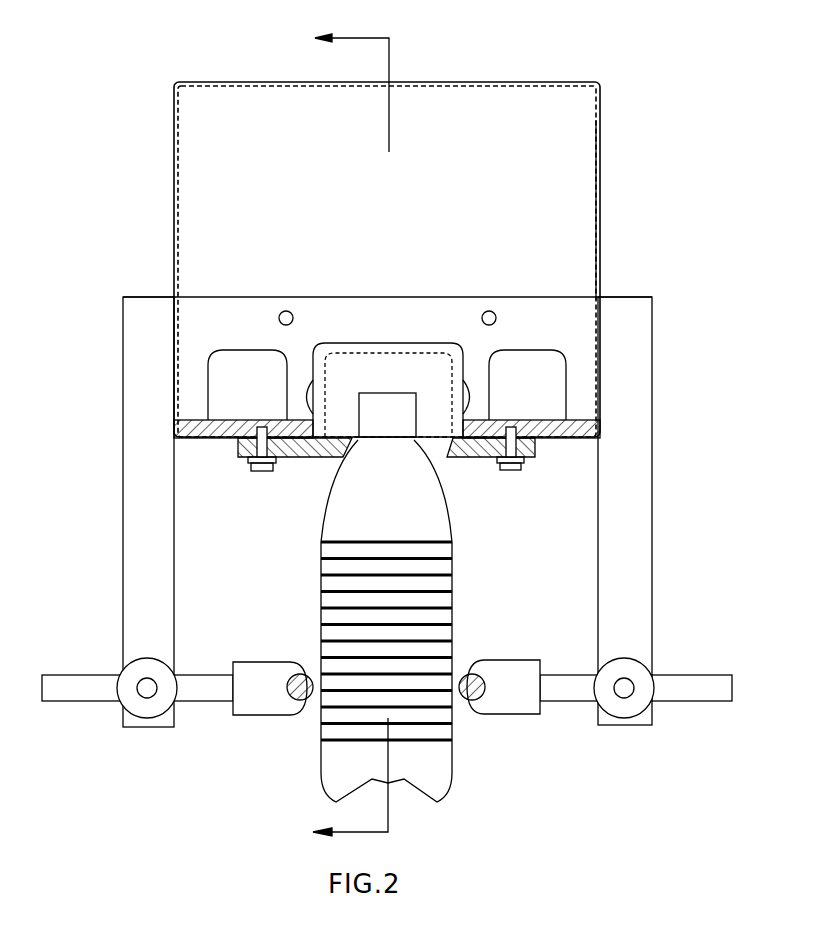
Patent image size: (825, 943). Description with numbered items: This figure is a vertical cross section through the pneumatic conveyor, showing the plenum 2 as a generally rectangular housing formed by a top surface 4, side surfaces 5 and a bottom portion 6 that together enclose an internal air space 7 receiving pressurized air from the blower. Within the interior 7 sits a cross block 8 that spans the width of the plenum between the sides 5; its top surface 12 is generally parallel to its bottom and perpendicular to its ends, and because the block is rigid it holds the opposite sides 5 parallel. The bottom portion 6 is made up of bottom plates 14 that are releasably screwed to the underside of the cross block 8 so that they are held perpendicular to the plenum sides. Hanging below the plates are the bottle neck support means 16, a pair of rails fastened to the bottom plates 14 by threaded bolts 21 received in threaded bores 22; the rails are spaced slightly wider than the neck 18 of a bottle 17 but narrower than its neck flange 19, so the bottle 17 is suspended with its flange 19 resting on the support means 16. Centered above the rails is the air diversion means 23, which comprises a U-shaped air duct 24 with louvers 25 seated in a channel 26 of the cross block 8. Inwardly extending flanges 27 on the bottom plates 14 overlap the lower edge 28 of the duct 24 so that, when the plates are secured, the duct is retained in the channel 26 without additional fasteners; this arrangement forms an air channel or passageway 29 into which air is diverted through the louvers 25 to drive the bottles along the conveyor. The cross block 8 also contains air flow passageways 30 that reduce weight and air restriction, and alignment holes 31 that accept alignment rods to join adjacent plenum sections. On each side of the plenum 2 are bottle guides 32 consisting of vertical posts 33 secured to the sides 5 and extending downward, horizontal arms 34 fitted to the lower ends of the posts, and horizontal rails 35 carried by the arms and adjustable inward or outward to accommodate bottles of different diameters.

The plenum 2 is at (428, 225).
The top surface 4 is at (290, 433).
The side surfaces 5 is at (650, 210).
The bottom portion 6 is at (456, 427).
The internal air space 7 is at (283, 171).
The cross block 8 is at (313, 258).
The top surface of cross block 12 is at (419, 249).
The bottom plates 14 is at (292, 393).
The bottle neck support means 16 is at (156, 467).
The bottle 17 is at (382, 517).
The neck 18 is at (445, 507).
The neck flange 19 is at (469, 541).
The threaded bolts 21 is at (159, 512).
The threaded bores 22 is at (626, 478).
The air diversion means 23 is at (444, 230).
The air duct 24 is at (524, 389).
The louvers 25 is at (263, 327).
The channel 26 is at (597, 332).
The inwardly extending flanges 27 is at (485, 481).
The lower edge 28 is at (278, 518).
The air channel or passageway 29 is at (397, 387).
The air flow passageways 30 is at (259, 399).
The alignment holes 31 is at (246, 279).
The bottle guides 32 is at (415, 744).
The vertical posts 33 is at (440, 512).
The horizontal arms 34 is at (430, 652).
The horizontal rails 35 is at (392, 736).